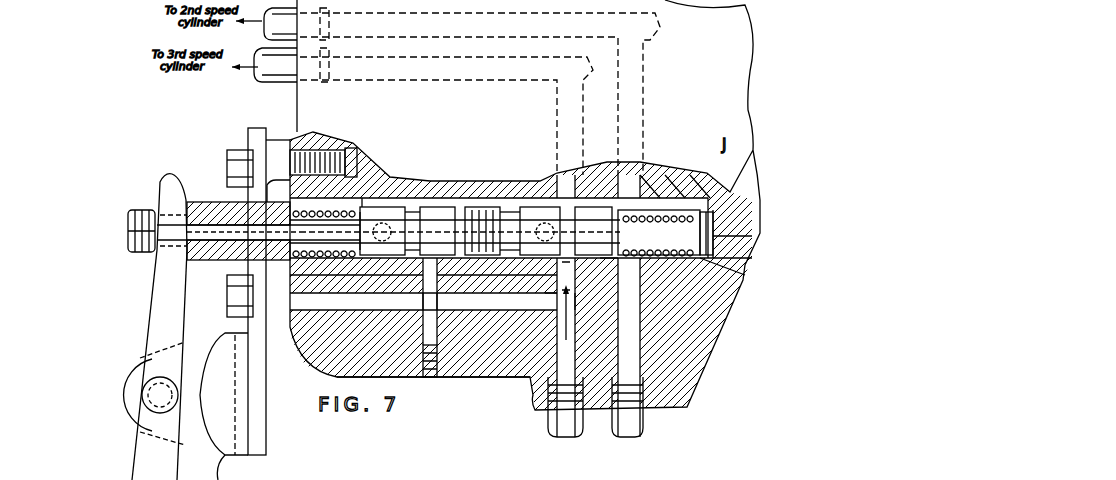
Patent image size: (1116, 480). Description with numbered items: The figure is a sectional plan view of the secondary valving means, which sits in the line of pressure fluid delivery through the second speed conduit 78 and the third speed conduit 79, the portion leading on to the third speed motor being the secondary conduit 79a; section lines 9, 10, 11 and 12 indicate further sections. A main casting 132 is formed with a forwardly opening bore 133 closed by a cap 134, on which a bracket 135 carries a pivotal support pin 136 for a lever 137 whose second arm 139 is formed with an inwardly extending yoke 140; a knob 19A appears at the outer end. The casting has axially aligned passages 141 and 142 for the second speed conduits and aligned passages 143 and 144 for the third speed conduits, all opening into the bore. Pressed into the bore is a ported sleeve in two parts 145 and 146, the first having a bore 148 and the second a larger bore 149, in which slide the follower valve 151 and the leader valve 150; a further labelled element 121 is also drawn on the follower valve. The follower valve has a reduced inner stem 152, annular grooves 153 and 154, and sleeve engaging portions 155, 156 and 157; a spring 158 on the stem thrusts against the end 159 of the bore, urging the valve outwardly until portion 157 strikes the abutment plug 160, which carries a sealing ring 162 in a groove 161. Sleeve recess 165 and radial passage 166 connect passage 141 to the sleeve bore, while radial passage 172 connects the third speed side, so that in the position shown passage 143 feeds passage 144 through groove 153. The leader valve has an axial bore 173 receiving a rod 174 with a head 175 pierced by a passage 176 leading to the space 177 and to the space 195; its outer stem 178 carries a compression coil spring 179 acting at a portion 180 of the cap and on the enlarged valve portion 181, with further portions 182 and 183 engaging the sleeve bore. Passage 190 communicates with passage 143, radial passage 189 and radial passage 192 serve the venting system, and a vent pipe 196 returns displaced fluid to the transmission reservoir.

The section line 9 is at (593, 149).
The section line 10 is at (650, 149).
The section line 11 is at (533, 168).
The section line 12 is at (372, 155).
The knob 19A is at (130, 222).
The second speed conduit 78 is at (643, 433).
The third speed conduit 79 is at (548, 434).
The secondary third speed conduit 79a is at (276, 82).
The valve land 121 is at (592, 231).
The main casting 132 is at (540, 183).
The bore 133 is at (700, 186).
The cap 134 is at (212, 202).
The bracket 135 is at (237, 467).
The pivotal support pin 136 is at (145, 385).
The lever 137 is at (128, 400).
The second arm 139 is at (157, 300).
The yoke 140 is at (163, 182).
The pressure fluid passage 141 is at (480, 205).
The pressure fluid passage 142 is at (643, 87).
The third speed passage 143 is at (470, 406).
The third speed passage 144 is at (557, 105).
The sleeve part 145 is at (655, 277).
The sleeve part 146 is at (408, 288).
The sleeve bore 148 is at (650, 185).
The sleeve bore 149 is at (440, 198).
The leader valve 150 is at (348, 148).
The follower valve 151 is at (680, 190).
The reduced inner stem 152 is at (745, 245).
The annular groove 153 is at (583, 200).
The annular groove 154 is at (552, 304).
The valve portion 155 is at (578, 296).
The valve portion 156 is at (578, 300).
The valve portion 157 is at (505, 311).
The spring 158 is at (722, 270).
The end of bore 159 is at (757, 215).
The abutment plug 160 is at (480, 311).
The groove 161 is at (502, 200).
The ring of fluid sealing material 162 is at (497, 290).
The arcuate recess 165 is at (641, 296).
The radial passage 166 is at (659, 233).
The radial passage 172 is at (572, 177).
The axial bore 173 is at (376, 354).
The rod 174 is at (205, 262).
The head 175 is at (455, 231).
The passage 176 is at (467, 210).
The space 177 is at (470, 290).
The outer stem 178 is at (324, 234).
The compression coil spring 179 is at (314, 150).
The portion of cap 180 is at (250, 148).
The enlarged valve portion 181 is at (425, 240).
The valve portion 182 is at (425, 300).
The valve portion 183 is at (450, 200).
The radial passage 189 is at (485, 476).
The passage 190 is at (456, 321).
The radial passage 192 is at (537, 200).
The space 195 is at (312, 352).
The vent pipe 196 is at (425, 205).